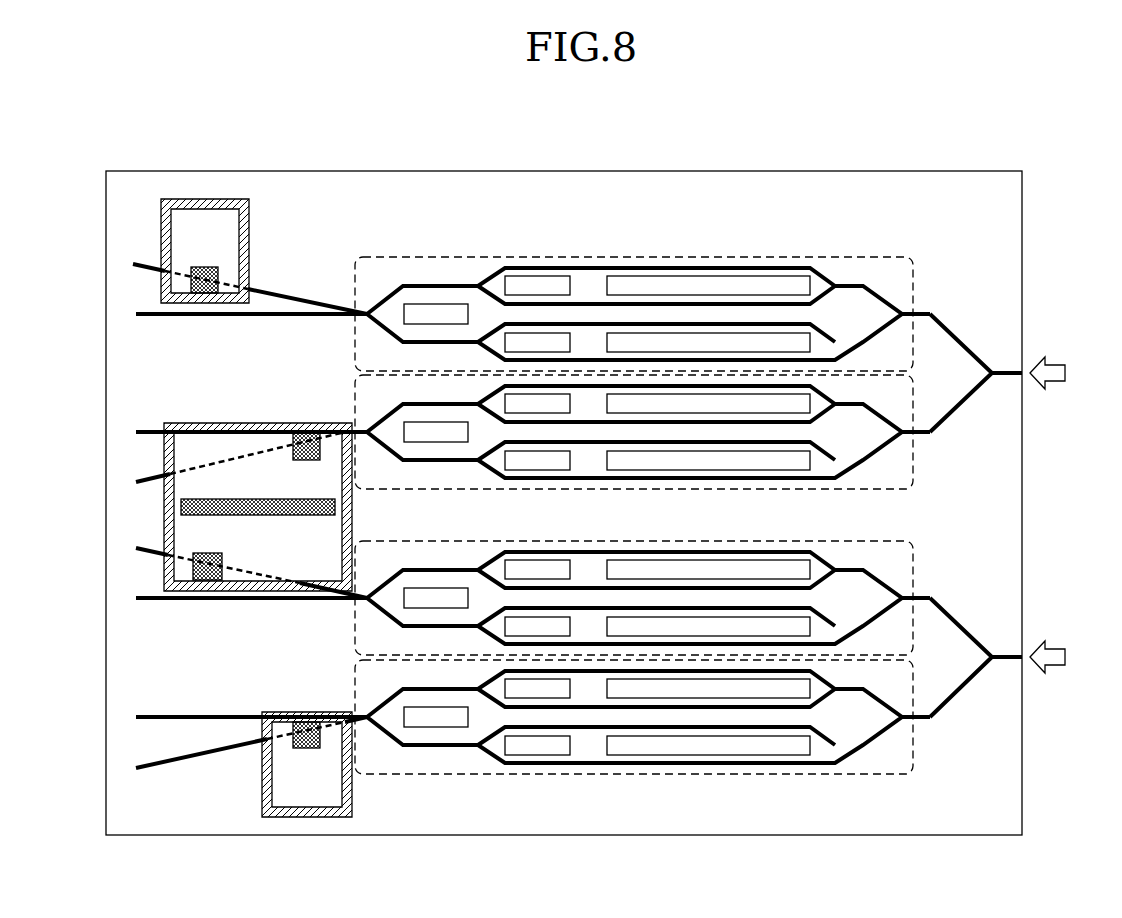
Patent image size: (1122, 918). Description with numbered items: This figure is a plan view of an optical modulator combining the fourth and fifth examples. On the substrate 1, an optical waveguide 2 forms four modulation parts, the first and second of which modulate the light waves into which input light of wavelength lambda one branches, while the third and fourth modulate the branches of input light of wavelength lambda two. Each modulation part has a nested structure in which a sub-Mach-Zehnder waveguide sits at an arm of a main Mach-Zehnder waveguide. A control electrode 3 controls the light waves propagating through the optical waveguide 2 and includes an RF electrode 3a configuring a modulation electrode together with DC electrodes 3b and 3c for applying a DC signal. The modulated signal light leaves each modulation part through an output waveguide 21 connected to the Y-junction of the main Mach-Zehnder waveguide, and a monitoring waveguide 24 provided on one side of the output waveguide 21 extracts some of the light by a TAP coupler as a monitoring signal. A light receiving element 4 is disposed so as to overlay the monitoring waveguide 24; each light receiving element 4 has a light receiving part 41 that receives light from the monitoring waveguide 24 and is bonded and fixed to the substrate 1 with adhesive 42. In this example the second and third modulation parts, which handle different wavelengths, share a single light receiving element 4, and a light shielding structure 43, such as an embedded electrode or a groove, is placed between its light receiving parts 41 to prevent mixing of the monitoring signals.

The substrate 1 is at (995, 193).
The optical waveguide 2 is at (991, 338).
The control electrode 3 is at (725, 432).
The RF electrode 3a is at (708, 246).
The DC electrode 3b is at (537, 246).
The DC electrode 3c is at (436, 232).
The light receiving element 4 is at (191, 462).
The output waveguide 21 is at (136, 314).
The monitoring waveguide 24 is at (136, 265).
The light receiving part 41 is at (203, 267).
The adhesive 42 is at (170, 200).
The light shielding structure 43 is at (181, 503).